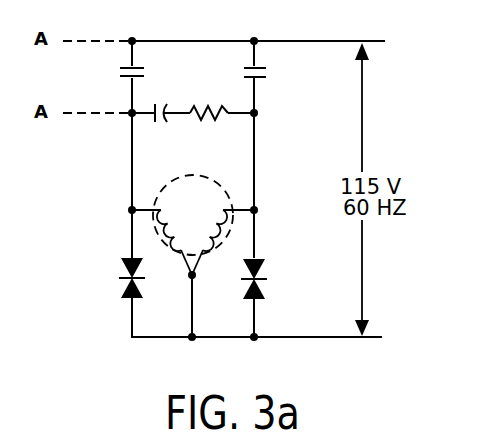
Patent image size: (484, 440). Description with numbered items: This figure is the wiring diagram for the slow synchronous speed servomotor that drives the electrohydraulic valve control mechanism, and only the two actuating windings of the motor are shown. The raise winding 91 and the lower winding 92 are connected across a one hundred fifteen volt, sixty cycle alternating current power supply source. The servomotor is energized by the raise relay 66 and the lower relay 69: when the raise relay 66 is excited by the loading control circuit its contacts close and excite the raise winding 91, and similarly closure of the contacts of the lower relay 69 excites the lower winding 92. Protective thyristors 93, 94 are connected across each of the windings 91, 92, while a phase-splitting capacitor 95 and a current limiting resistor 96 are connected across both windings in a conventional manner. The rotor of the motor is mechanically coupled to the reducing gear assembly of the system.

The raise relay 66 is at (124, 77).
The lower relay 69 is at (258, 77).
The raise winding 91 is at (173, 201).
The lower winding 92 is at (221, 201).
The protective thyristor 93 is at (120, 262).
The protective thyristor 94 is at (264, 268).
The phase-splitting capacitor 95 is at (159, 106).
The current limiting resistor 96 is at (206, 118).